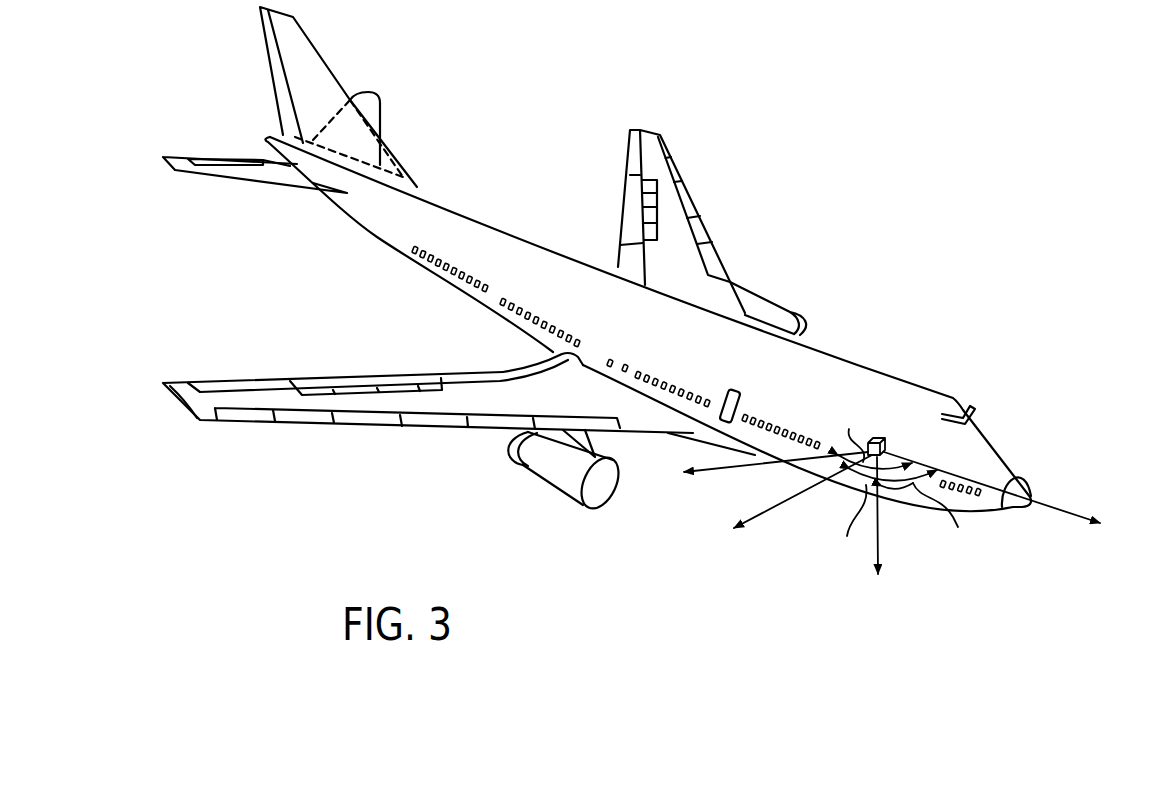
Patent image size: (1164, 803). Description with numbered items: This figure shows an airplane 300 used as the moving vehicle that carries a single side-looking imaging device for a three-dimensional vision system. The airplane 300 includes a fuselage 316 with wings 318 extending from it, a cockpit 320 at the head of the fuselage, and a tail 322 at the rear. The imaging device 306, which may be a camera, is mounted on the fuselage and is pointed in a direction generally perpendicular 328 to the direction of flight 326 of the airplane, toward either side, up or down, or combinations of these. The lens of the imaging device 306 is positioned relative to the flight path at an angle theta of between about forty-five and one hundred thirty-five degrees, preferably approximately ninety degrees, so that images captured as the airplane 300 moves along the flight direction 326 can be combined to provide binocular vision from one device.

The airplane 300 is at (829, 219).
The imaging device 306 is at (880, 440).
The fuselage 316 is at (503, 232).
The wings 318 is at (272, 397).
The cockpit 320 is at (975, 389).
The tail 322 is at (268, 138).
The direction of flight 326 is at (1063, 507).
The perpendicular direction 328 is at (880, 533).